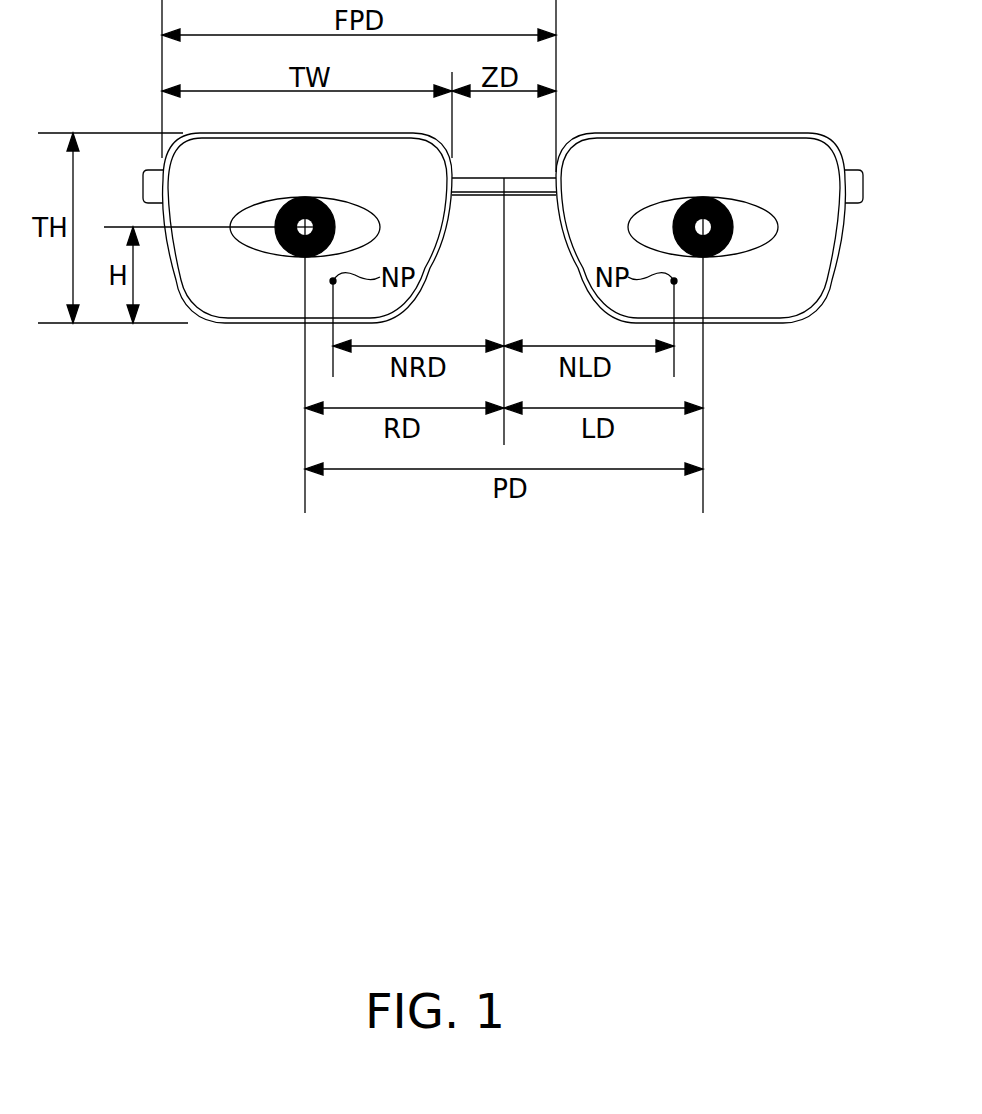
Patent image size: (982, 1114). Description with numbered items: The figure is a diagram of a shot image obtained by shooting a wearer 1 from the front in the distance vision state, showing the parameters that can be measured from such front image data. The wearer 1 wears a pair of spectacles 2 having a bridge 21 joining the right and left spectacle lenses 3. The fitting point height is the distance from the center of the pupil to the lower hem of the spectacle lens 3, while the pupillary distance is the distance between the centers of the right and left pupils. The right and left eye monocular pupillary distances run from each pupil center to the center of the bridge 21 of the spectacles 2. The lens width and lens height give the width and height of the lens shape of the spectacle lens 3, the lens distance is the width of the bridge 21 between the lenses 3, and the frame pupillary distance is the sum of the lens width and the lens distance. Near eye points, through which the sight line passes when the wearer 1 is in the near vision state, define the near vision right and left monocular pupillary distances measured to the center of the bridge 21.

The wearer 1 is at (514, 197).
The pair of spectacles 2 is at (717, 133).
The bridge 21 is at (476, 178).
The spectacle lens 3 is at (230, 298).